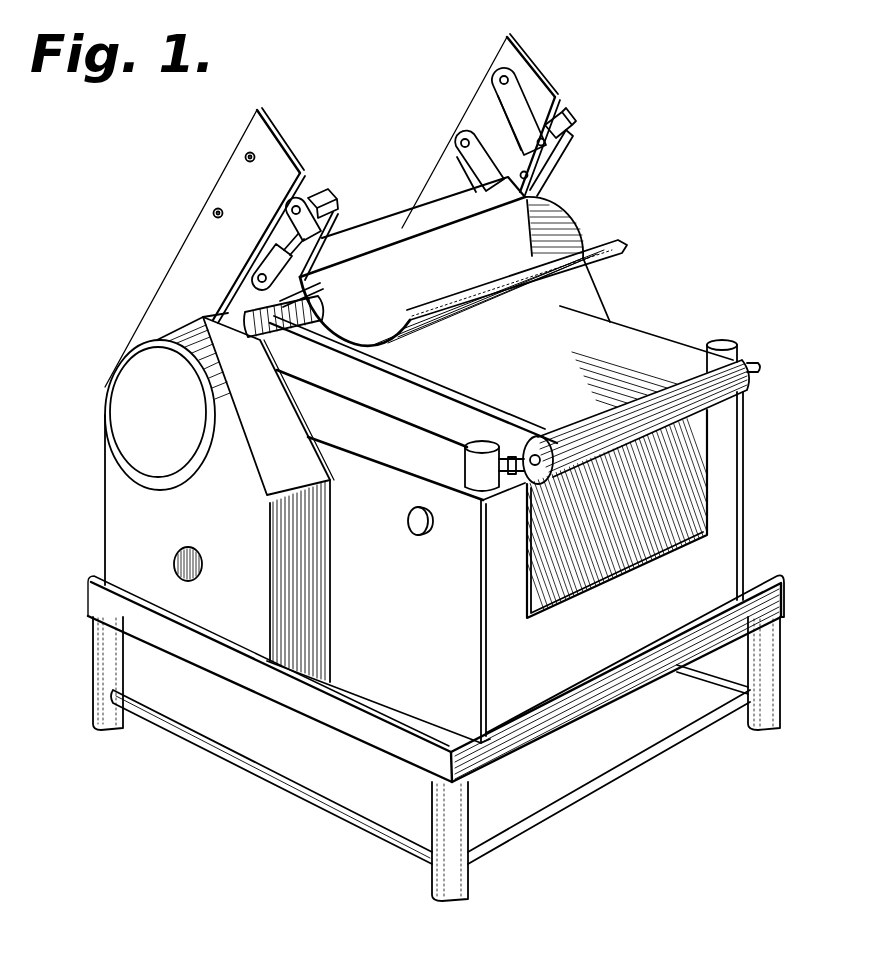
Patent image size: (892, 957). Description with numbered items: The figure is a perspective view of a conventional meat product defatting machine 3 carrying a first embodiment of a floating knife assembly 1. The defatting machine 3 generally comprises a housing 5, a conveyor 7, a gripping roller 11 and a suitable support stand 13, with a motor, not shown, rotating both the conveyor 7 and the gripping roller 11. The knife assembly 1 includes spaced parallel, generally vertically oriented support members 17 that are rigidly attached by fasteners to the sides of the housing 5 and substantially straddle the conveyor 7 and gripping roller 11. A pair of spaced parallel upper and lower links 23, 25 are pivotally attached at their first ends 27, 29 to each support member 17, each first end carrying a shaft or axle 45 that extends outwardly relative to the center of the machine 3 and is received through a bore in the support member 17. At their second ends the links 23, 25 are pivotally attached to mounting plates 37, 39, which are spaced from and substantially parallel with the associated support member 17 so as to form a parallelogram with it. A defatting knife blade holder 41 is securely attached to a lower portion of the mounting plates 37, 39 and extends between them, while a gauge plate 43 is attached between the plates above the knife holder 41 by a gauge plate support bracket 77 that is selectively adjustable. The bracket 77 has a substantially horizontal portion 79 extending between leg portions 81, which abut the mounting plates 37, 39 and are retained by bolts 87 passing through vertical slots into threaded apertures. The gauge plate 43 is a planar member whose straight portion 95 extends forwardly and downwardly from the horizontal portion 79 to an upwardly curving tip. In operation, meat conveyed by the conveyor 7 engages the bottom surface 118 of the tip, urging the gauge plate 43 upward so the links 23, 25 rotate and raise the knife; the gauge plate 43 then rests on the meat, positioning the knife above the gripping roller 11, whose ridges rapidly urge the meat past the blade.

The floating knife assembly 1 is at (421, 94).
The meat product defatting machine 3 is at (100, 495).
The housing 5 is at (377, 660).
The conveyor 7 is at (624, 345).
The gripping roller 11 is at (260, 316).
The support stand 13 is at (470, 880).
The support members 17 is at (257, 110).
The upper link 23 is at (288, 205).
The lower link 25 is at (254, 270).
The first end of upper link 27 is at (498, 96).
The first end of lower link 29 is at (462, 162).
The mounting plate 37 is at (576, 136).
The mounting plate 39 is at (287, 244).
The defatting knife blade holder 41 is at (320, 302).
The gauge plate 43 is at (626, 246).
The shaft or axle 45 is at (244, 158).
The gauge plate support bracket 77 is at (565, 110).
The horizontal portion 79 is at (357, 233).
The leg portions 81 is at (546, 166).
The bolts 87 is at (541, 184).
The straight portion 95 is at (458, 232).
The bottom surface 118 is at (480, 308).